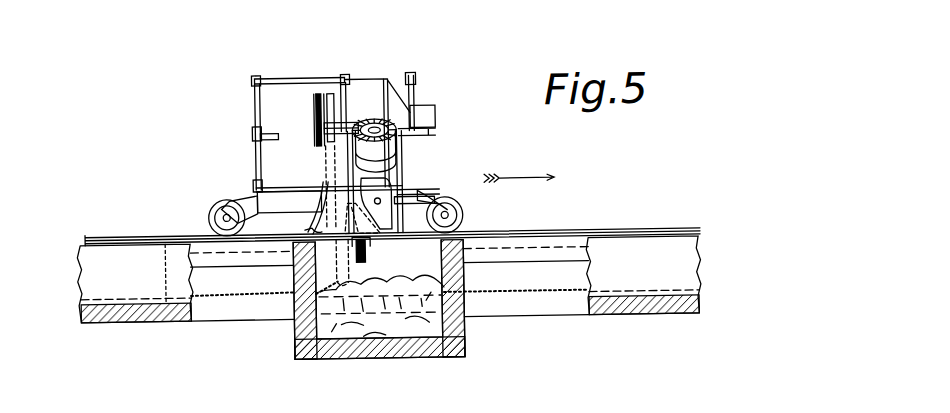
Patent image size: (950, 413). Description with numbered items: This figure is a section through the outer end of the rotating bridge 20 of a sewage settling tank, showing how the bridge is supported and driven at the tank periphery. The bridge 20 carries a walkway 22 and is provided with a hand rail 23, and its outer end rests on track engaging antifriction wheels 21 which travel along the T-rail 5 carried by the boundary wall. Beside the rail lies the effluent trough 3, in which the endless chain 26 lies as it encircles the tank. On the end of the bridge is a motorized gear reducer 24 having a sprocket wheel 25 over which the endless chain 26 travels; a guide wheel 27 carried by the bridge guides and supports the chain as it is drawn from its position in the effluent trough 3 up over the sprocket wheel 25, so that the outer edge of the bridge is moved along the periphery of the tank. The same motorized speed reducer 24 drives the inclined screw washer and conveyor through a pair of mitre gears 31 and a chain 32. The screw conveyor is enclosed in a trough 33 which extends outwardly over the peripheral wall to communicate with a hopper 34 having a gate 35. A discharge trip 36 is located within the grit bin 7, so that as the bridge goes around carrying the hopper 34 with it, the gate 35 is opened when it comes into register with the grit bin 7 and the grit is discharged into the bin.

The effluent trough 3 is at (95, 272).
The T-rail 5 is at (622, 231).
The grit bin 7 is at (355, 338).
The bridge 20 is at (269, 202).
The track engaging antifriction wheels 21 is at (209, 209).
The walkway 22 is at (286, 185).
The hand rail 23 is at (254, 78).
The motorized gear reducer 24 is at (359, 78).
The sprocket wheel 25 is at (333, 92).
The endless chain 26 is at (124, 292).
The guide wheel 27 is at (318, 291).
The mitre gears 31 is at (358, 125).
The chain 32 is at (318, 113).
The trough 33 is at (383, 151).
The hopper 34 is at (388, 182).
The gate 35 is at (311, 222).
The discharge trip 36 is at (372, 238).